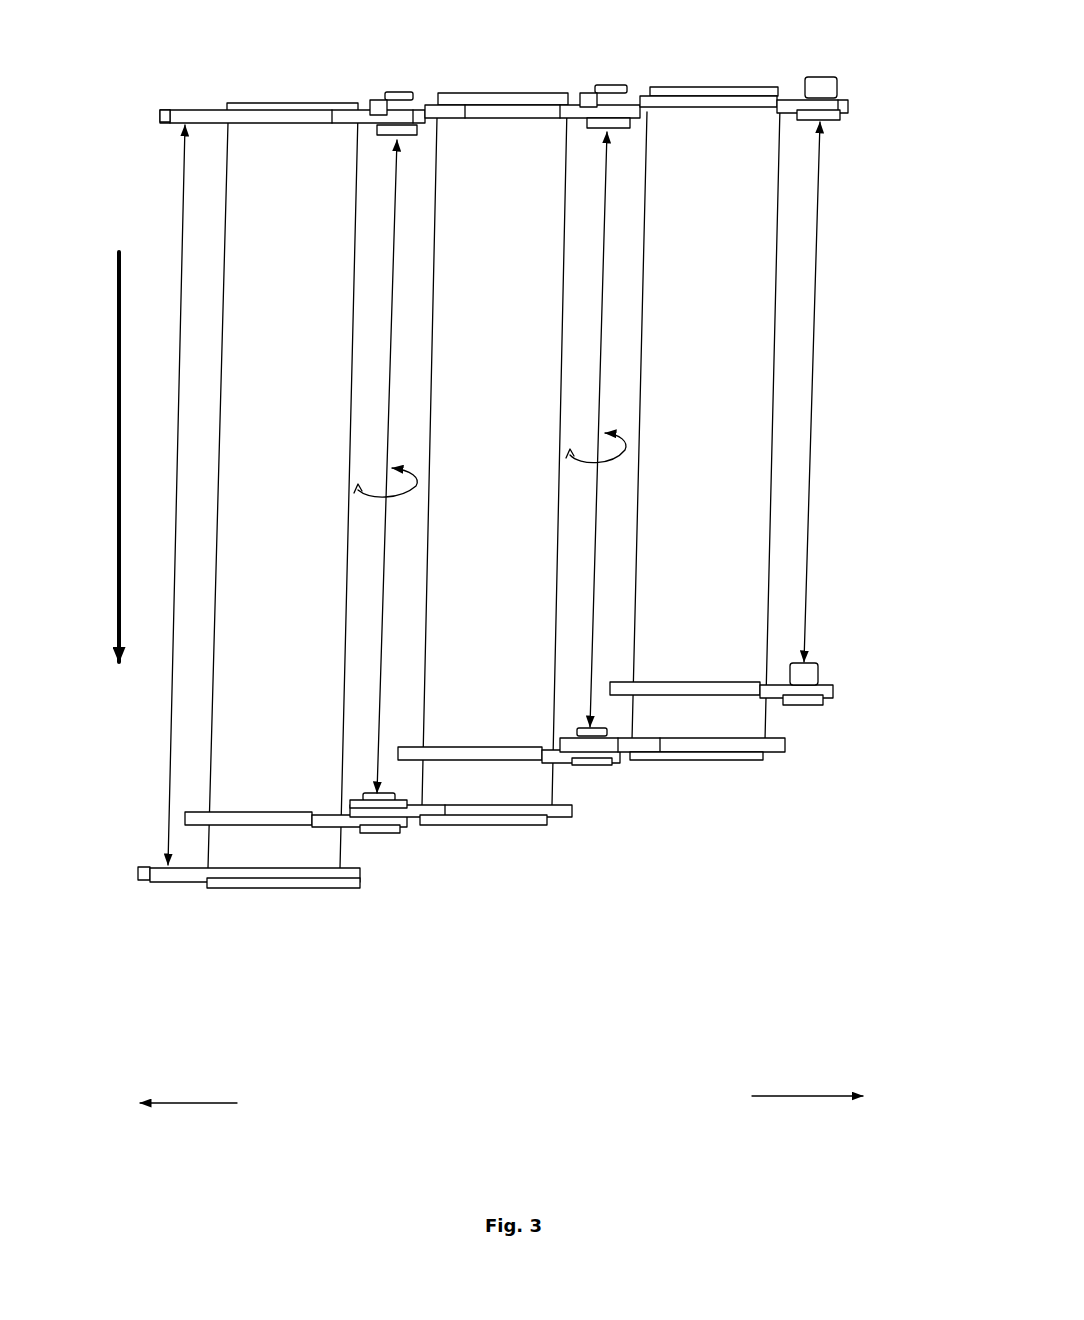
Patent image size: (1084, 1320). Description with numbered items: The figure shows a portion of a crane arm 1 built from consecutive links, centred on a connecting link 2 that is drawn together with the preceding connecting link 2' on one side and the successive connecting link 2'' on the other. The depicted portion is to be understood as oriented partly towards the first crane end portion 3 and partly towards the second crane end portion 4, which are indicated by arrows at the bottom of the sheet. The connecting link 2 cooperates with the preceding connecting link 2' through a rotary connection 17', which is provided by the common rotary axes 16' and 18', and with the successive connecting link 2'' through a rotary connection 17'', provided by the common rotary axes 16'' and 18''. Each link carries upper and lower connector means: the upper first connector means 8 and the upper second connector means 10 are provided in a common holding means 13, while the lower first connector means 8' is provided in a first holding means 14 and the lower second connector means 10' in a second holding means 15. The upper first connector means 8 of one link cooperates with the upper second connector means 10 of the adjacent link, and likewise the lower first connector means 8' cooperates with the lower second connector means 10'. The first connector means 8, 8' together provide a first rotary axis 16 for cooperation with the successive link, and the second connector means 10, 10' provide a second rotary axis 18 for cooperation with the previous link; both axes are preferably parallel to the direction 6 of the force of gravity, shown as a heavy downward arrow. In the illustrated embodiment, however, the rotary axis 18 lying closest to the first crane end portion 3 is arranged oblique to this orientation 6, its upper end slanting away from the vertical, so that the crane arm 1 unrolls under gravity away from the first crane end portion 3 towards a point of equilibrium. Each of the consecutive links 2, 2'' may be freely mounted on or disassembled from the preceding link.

The crane arm 1 is at (178, 943).
The connecting link 2 is at (500, 557).
The preceding connecting link 2' is at (298, 575).
The successive connecting link 2'' is at (724, 522).
The first crane end portion 3 is at (188, 1103).
The second crane end portion 4 is at (798, 1096).
The direction of the force of gravity 6 is at (122, 280).
The upper first connector means 8 is at (645, 69).
The lower first connector means 8' is at (620, 778).
The upper second connector means 10 is at (346, 63).
The lower second connector means 10' is at (423, 834).
The common holding means 13 is at (230, 117).
The first holding means 14 is at (297, 817).
The second holding means 15 is at (330, 882).
The first rotary axis 16 is at (870, 392).
The rotary axis 16' is at (321, 466).
The rotary axis 16'' is at (523, 429).
The rotary connection 17' is at (433, 507).
The rotary connection 17'' is at (660, 471).
The second rotary axis 18 is at (138, 495).
The rotary axis 18' is at (340, 466).
The rotary axis 18'' is at (545, 429).